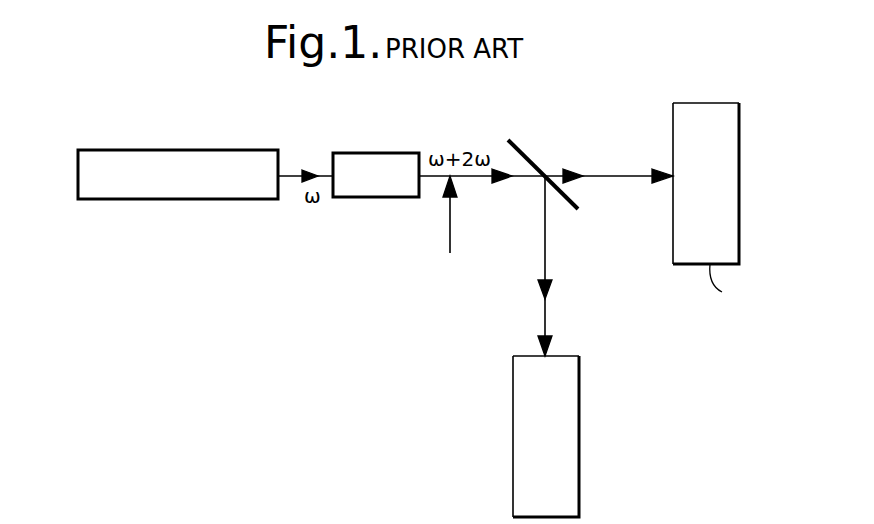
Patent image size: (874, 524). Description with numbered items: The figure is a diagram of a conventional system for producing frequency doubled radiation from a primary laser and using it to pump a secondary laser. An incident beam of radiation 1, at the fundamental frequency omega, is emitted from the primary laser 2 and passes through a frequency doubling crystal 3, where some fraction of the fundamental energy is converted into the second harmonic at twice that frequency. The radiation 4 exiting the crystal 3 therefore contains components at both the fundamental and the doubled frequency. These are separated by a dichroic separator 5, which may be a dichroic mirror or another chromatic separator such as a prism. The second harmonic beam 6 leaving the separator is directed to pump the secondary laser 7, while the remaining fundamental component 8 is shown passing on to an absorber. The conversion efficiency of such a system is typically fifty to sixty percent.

The incident beam of radiation 1 is at (287, 170).
The primary laser 2 is at (195, 155).
The frequency doubling crystal 3 is at (360, 158).
The radiation exiting the crystal 4 is at (452, 228).
The dichroic separator 5 is at (522, 148).
The second harmonic beam 6 is at (545, 262).
The secondary laser 7 is at (570, 494).
The residual fundamental beam to absorber 8 is at (603, 172).